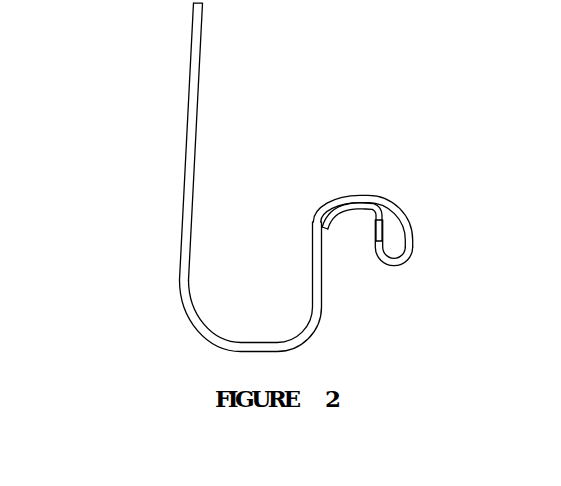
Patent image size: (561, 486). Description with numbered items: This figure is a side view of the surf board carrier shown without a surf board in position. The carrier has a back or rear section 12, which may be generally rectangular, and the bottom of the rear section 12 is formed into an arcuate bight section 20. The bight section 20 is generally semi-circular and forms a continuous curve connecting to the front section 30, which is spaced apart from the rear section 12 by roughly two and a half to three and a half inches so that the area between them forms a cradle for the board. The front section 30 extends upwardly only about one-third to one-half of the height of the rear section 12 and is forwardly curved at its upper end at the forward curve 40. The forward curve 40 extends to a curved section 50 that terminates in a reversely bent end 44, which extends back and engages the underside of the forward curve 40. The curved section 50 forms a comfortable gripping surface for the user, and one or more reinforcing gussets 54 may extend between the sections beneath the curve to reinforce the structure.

The rear section 12 is at (187, 127).
The bight section 20 is at (252, 334).
The front section 30 is at (321, 296).
The forward curve 40 is at (367, 197).
The reversely bent end 44 is at (372, 222).
The curved section 50 is at (390, 273).
The reinforcing gusset 54 is at (331, 212).